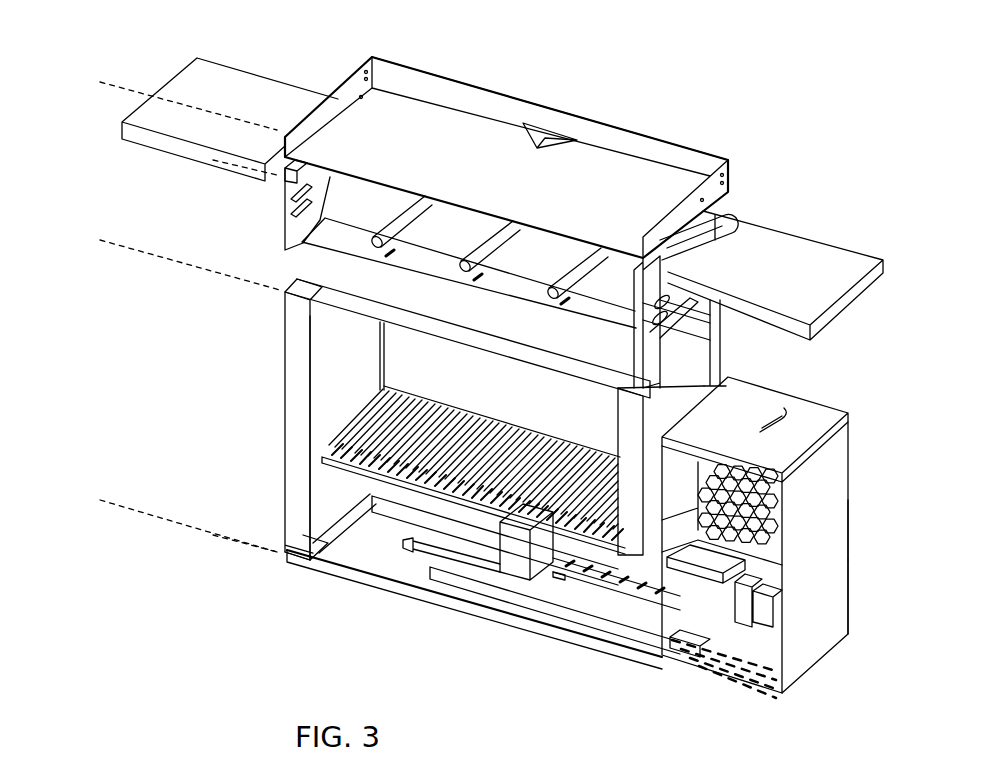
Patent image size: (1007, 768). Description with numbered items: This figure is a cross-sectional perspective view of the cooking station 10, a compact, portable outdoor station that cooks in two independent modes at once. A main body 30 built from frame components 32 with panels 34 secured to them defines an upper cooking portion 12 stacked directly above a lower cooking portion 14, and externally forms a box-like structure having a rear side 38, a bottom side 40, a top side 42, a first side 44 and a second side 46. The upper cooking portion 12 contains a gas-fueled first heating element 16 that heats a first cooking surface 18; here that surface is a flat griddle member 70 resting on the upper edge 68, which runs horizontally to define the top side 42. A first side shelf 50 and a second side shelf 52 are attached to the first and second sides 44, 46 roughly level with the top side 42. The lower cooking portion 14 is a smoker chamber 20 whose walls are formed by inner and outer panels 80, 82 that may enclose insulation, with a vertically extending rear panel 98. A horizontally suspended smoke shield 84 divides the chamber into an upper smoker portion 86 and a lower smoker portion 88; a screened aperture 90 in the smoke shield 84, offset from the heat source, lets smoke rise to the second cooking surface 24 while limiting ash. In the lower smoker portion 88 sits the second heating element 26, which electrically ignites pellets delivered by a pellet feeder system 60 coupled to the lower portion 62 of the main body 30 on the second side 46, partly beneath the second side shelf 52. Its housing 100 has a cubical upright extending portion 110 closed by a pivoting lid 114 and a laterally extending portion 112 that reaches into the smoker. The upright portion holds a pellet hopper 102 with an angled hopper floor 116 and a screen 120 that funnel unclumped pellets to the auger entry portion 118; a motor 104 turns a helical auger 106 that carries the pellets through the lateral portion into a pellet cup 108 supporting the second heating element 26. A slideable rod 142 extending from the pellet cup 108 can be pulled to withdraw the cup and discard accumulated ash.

The cooking station 10 is at (867, 98).
The upper cooking portion 12 is at (100, 80).
The lower cooking portion 14 is at (100, 500).
The first heating element 16 is at (413, 220).
The first cooking surface 18 is at (363, 117).
The smoker chamber 20 is at (333, 405).
The second cooking surface 24 is at (372, 417).
The second heating element 26 is at (565, 590).
The main body 30 is at (213, 157).
The frame components 32 is at (723, 310).
The panels 34 is at (680, 300).
The rear side 38 is at (762, 182).
The bottom side 40 is at (467, 627).
The top side 42 is at (575, 75).
The first side 44 is at (263, 257).
The second side 46 is at (877, 425).
The first side shelf 50 is at (177, 75).
The second side shelf 52 is at (833, 240).
The pellet feeder system 60 is at (848, 558).
The lower portion 62 is at (280, 518).
The upper edge 68 is at (710, 247).
The griddle member 70 is at (482, 82).
The inner panel 80 is at (343, 330).
The outer panel 82 is at (285, 338).
The smoke shield 84 is at (330, 525).
The upper smoker portion 86 is at (330, 360).
The lower smoker portion 88 is at (358, 537).
The aperture 90 is at (412, 485).
The rear panel 98 is at (487, 370).
The housing 100 is at (833, 607).
The pellet hopper 102 is at (805, 423).
The motor 104 is at (773, 612).
The auger 106 is at (613, 637).
The pellet cup 108 is at (528, 577).
The upright extending portion 110 is at (833, 483).
The laterally extending portion 112 is at (590, 607).
The lid 114 is at (803, 420).
The hopper floor 116 is at (733, 550).
The auger entry portion 118 is at (745, 560).
The screen 120 is at (693, 497).
The slideable rod 142 is at (432, 547).